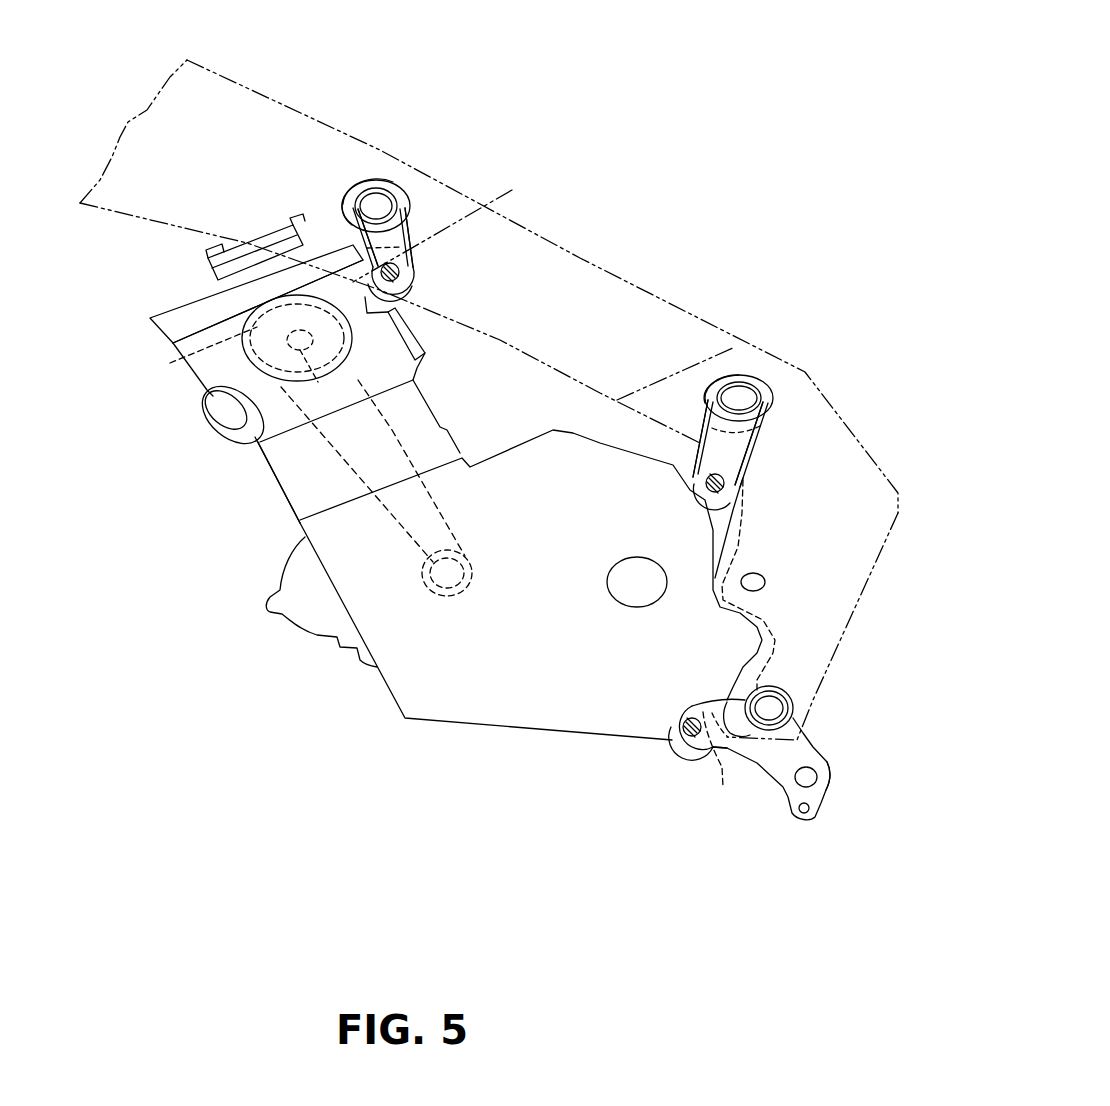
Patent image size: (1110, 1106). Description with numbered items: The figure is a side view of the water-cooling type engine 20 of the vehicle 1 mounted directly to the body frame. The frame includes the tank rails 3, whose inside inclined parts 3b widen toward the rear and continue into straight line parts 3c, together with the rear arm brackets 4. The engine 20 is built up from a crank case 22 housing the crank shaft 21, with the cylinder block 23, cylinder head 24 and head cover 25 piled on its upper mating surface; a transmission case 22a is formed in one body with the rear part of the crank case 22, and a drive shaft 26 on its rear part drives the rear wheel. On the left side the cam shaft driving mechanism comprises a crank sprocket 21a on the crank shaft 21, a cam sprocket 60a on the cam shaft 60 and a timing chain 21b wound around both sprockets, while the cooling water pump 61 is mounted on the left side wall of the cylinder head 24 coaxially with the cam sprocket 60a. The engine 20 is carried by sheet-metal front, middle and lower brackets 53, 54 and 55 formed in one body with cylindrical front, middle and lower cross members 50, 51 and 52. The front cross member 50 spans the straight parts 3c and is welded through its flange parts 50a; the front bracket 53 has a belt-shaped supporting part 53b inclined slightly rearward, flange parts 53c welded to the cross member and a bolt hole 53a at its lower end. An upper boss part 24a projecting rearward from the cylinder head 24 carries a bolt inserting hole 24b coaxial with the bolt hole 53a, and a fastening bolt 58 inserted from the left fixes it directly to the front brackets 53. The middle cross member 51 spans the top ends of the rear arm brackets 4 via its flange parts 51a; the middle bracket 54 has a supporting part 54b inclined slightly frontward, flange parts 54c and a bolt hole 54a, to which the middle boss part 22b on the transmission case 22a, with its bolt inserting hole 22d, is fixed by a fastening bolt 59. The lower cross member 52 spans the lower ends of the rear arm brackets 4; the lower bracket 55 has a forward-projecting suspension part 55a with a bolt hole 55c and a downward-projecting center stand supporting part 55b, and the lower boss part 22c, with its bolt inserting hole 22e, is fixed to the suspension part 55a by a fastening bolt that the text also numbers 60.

The motorcycle 1 is at (820, 303).
The tank rails 3 is at (622, 280).
The inside inclined parts 3b is at (269, 87).
The straight line parts 3c is at (512, 192).
The rear arm brackets 4 is at (880, 588).
The engine 20 is at (156, 358).
The crank shaft 21 is at (470, 529).
The crank sprocket 21a is at (473, 569).
The timing chain 21b is at (437, 506).
The crank case 22 is at (383, 691).
The transmission case 22a is at (745, 612).
The middle boss part 22b is at (748, 514).
The lower boss part 22c is at (732, 763).
The bolt inserting hole 22d is at (690, 463).
The bolt inserting hole 22e is at (703, 713).
The cylinder block 23 is at (270, 477).
The cylinder head 24 is at (198, 396).
The upper boss part 24a is at (415, 279).
The bolt inserting hole 24b is at (420, 327).
The head cover 25 is at (200, 290).
The drive shaft 26 is at (612, 600).
The front cross member 50 is at (396, 182).
The flange parts 50a is at (352, 182).
The middle cross member 51 is at (756, 388).
The flange parts 51a is at (752, 376).
The lower cross member 52 is at (794, 702).
The front brackets 53 is at (415, 252).
The bolt hole 53a is at (416, 262).
The supporting parts 53b is at (425, 258).
The flange parts 53c is at (334, 217).
The middle brackets 54 is at (767, 445).
The bolt hole 54a is at (746, 481).
The supporting parts 54b is at (752, 464).
The flange parts 54c is at (704, 421).
The lower brackets 55 is at (711, 695).
The suspension parts 55a is at (703, 745).
The center stand supporting parts 55b is at (833, 786).
The bolt holes 55c is at (717, 745).
The fastening bolt 58 is at (412, 286).
The fastening bolt 59 is at (705, 493).
The cam shaft 60 is at (676, 714).
The cam sprocket 60a is at (205, 400).
The cooling water pump 61 is at (230, 326).